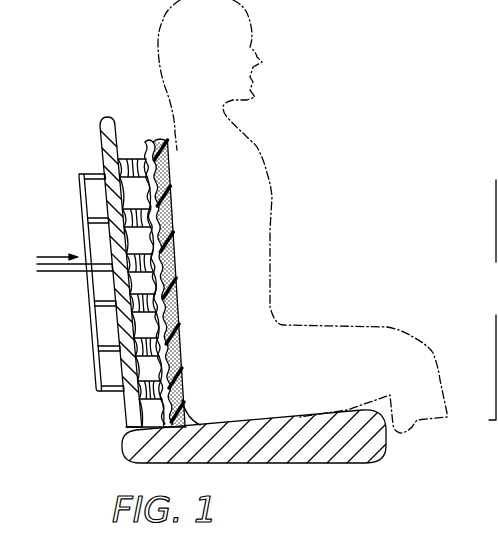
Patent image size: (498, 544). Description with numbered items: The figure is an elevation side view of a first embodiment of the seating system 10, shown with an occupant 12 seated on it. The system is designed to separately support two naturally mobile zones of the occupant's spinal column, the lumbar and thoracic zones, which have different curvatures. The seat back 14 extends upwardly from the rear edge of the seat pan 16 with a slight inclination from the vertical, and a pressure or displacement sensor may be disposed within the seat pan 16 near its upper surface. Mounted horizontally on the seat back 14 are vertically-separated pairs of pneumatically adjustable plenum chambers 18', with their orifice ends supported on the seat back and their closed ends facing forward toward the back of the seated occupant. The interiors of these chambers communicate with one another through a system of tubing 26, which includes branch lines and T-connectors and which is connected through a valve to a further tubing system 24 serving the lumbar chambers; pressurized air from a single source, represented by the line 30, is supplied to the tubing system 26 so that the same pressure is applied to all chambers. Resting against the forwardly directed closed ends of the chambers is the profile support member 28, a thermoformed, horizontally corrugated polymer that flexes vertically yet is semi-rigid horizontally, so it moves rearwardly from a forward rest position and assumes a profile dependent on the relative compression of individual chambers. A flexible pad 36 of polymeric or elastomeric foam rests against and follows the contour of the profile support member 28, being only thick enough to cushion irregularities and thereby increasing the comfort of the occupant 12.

The seating system 10 is at (92, 83).
The occupant 12 is at (243, 141).
The seat back 14 is at (108, 135).
The seat pan 16 is at (302, 420).
The plenum chambers 18' is at (140, 276).
The tubing system 24 is at (93, 323).
The tubing system 26 is at (85, 189).
The profile support member 28 is at (150, 140).
The line 30 is at (62, 272).
The flexible pad 36 is at (163, 140).